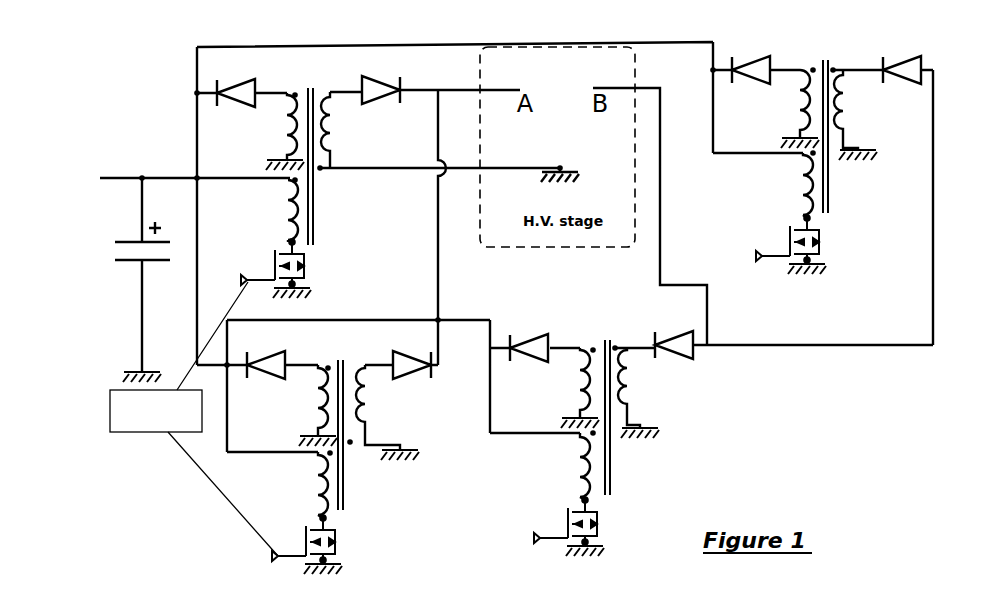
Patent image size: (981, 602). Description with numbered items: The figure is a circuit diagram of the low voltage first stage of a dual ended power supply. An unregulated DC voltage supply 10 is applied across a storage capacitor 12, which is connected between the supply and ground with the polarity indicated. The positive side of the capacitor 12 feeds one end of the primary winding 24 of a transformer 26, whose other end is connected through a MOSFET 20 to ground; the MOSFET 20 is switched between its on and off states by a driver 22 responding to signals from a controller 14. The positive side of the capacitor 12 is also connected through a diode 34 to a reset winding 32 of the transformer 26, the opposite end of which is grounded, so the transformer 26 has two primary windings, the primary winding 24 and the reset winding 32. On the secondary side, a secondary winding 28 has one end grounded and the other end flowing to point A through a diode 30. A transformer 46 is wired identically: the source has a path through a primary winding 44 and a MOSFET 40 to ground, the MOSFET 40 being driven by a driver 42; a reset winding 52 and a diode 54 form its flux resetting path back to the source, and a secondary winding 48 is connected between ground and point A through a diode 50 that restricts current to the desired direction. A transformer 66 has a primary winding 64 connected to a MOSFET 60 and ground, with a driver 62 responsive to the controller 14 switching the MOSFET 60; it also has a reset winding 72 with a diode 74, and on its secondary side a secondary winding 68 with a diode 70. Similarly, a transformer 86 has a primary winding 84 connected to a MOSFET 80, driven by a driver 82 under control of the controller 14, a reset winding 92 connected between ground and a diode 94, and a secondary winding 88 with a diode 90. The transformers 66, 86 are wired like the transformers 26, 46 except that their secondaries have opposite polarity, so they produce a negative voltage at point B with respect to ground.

The DC voltage supply 10 is at (195, 162).
The storage capacitor 12 is at (134, 280).
The controller 14 is at (156, 428).
The MOSFET 20 is at (316, 263).
The driver 22 is at (240, 276).
The primary winding 24 is at (272, 216).
The transformer 26 is at (313, 86).
The secondary winding 28 is at (346, 128).
The diode 30 is at (385, 76).
The reset winding 32 is at (270, 142).
The diode 34 is at (240, 80).
The MOSFET 40 is at (356, 538).
The driver 42 is at (286, 532).
The primary winding 44 is at (302, 483).
The transformer 46 is at (341, 358).
The secondary winding 48 is at (376, 402).
The diode 50 is at (414, 352).
The reset winding 52 is at (306, 403).
The diode 54 is at (266, 352).
The MOSFET 60 is at (838, 240).
The driver 62 is at (758, 248).
The primary winding 64 is at (790, 184).
The transformer 66 is at (829, 58).
The secondary winding 68 is at (860, 104).
The diode 70 is at (904, 80).
The reset winding 72 is at (786, 108).
The diode 74 is at (750, 54).
The MOSFET 80 is at (616, 519).
The driver 82 is at (530, 530).
The primary winding 84 is at (566, 486).
The transformer 86 is at (607, 336).
The secondary winding 88 is at (645, 384).
The diode 90 is at (677, 330).
The reset winding 92 is at (566, 398).
The diode 94 is at (522, 330).